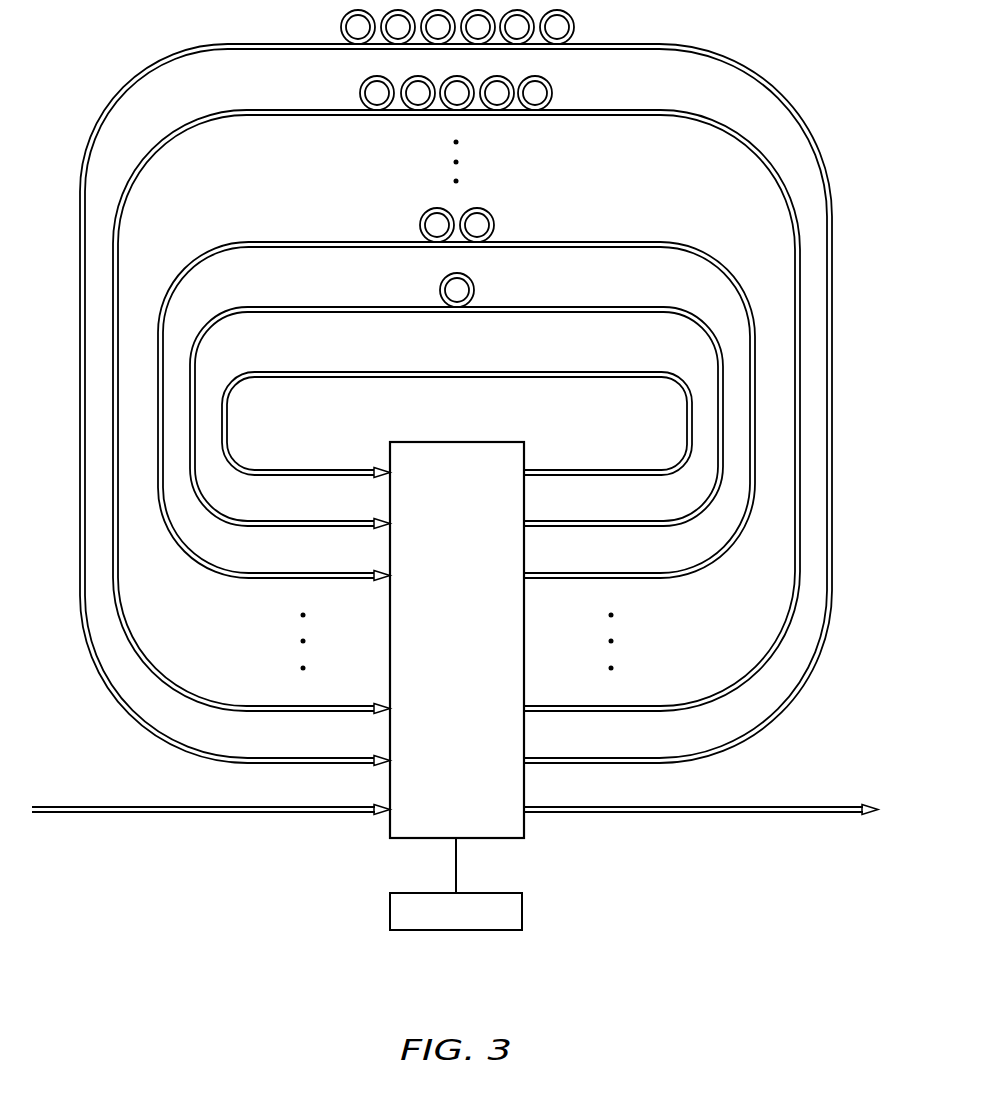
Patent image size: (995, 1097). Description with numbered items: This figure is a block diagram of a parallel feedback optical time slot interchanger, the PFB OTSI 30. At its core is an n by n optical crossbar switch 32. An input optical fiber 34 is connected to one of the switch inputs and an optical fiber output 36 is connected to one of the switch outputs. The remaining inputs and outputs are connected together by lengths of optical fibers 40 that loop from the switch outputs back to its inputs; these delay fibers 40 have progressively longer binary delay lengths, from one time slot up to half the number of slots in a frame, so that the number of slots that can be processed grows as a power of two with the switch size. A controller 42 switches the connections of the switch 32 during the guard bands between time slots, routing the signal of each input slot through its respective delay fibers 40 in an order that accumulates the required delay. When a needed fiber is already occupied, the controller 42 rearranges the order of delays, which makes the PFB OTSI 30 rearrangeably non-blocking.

The parallel feedback optical time slot interchanger 30 is at (455, 496).
The n x n optical crossbar switch 32 is at (488, 442).
The input optical fiber 34 is at (204, 815).
The optical fiber output 36 is at (695, 815).
The delay fibers 40 is at (655, 50).
The controller 42 is at (487, 893).